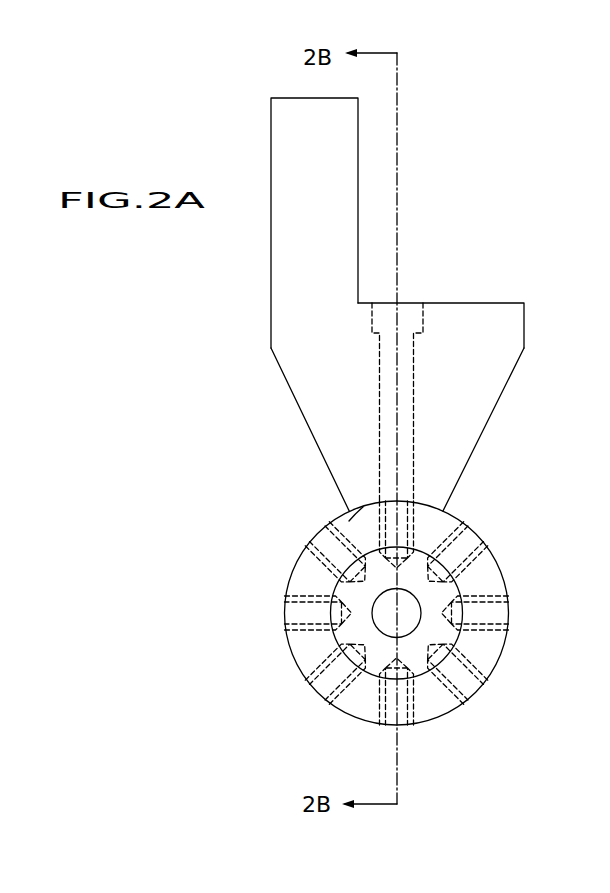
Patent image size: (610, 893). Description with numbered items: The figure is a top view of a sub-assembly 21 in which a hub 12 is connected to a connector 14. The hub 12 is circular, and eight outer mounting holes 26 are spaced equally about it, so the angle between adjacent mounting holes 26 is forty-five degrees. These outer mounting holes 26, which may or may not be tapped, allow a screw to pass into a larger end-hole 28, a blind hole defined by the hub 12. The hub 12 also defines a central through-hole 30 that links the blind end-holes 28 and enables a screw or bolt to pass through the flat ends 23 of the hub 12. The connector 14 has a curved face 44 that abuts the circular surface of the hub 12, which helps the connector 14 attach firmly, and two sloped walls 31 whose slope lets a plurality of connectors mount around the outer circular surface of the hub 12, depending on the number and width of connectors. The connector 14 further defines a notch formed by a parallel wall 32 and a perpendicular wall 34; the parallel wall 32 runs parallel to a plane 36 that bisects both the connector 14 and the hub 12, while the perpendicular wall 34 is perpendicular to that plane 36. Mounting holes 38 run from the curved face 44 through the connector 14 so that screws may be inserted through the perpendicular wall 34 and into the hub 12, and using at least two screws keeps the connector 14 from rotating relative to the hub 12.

The hub 12 is at (509, 580).
The connector 14 is at (518, 300).
The sub-assembly 21 is at (516, 128).
The flat ends 23 is at (300, 578).
The outer mounting holes 26 is at (403, 520).
The end-hole 28 is at (447, 714).
The through-hole 30 is at (388, 636).
The sloped walls 31 is at (290, 391).
The parallel wall 32 is at (358, 193).
The perpendicular wall 34 is at (467, 303).
The plane 36 is at (398, 137).
The mounting holes 38 is at (380, 413).
The curved face 44 is at (362, 508).